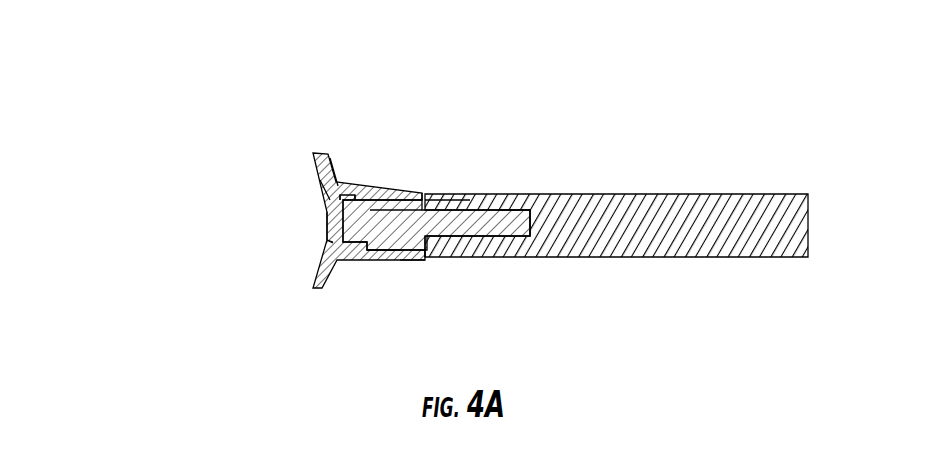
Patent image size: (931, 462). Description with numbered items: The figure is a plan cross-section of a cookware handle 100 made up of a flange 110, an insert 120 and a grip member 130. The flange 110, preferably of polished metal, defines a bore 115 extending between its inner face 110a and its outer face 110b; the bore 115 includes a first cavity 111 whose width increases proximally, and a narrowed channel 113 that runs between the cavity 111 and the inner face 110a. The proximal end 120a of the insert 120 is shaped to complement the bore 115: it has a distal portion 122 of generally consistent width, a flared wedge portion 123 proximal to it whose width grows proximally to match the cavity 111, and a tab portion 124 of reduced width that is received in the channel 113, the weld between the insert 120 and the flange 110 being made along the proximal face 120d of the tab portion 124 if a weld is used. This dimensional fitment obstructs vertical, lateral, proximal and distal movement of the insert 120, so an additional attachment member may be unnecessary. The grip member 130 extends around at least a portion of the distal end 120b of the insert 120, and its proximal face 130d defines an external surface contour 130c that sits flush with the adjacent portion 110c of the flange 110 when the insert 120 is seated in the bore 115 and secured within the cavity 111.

The handle 100 is at (143, 92).
The flange 110 is at (323, 288).
The inner face 110a is at (316, 164).
The outer face 110b is at (463, 198).
The adjacent portion 110c is at (424, 187).
The first cavity 111 is at (384, 258).
The narrowed channel 113 is at (325, 192).
The bore 115 is at (380, 198).
The insert 120 is at (483, 232).
The proximal end 120a is at (390, 208).
The distal end 120b is at (531, 211).
The proximal face 120d is at (326, 223).
The distal portion 122 is at (516, 205).
The flared wedge portion 123 is at (340, 196).
The tab portion 124 is at (326, 233).
The grip member 130 is at (668, 258).
The external surface contour 130c is at (412, 259).
The proximal face 130d is at (422, 259).